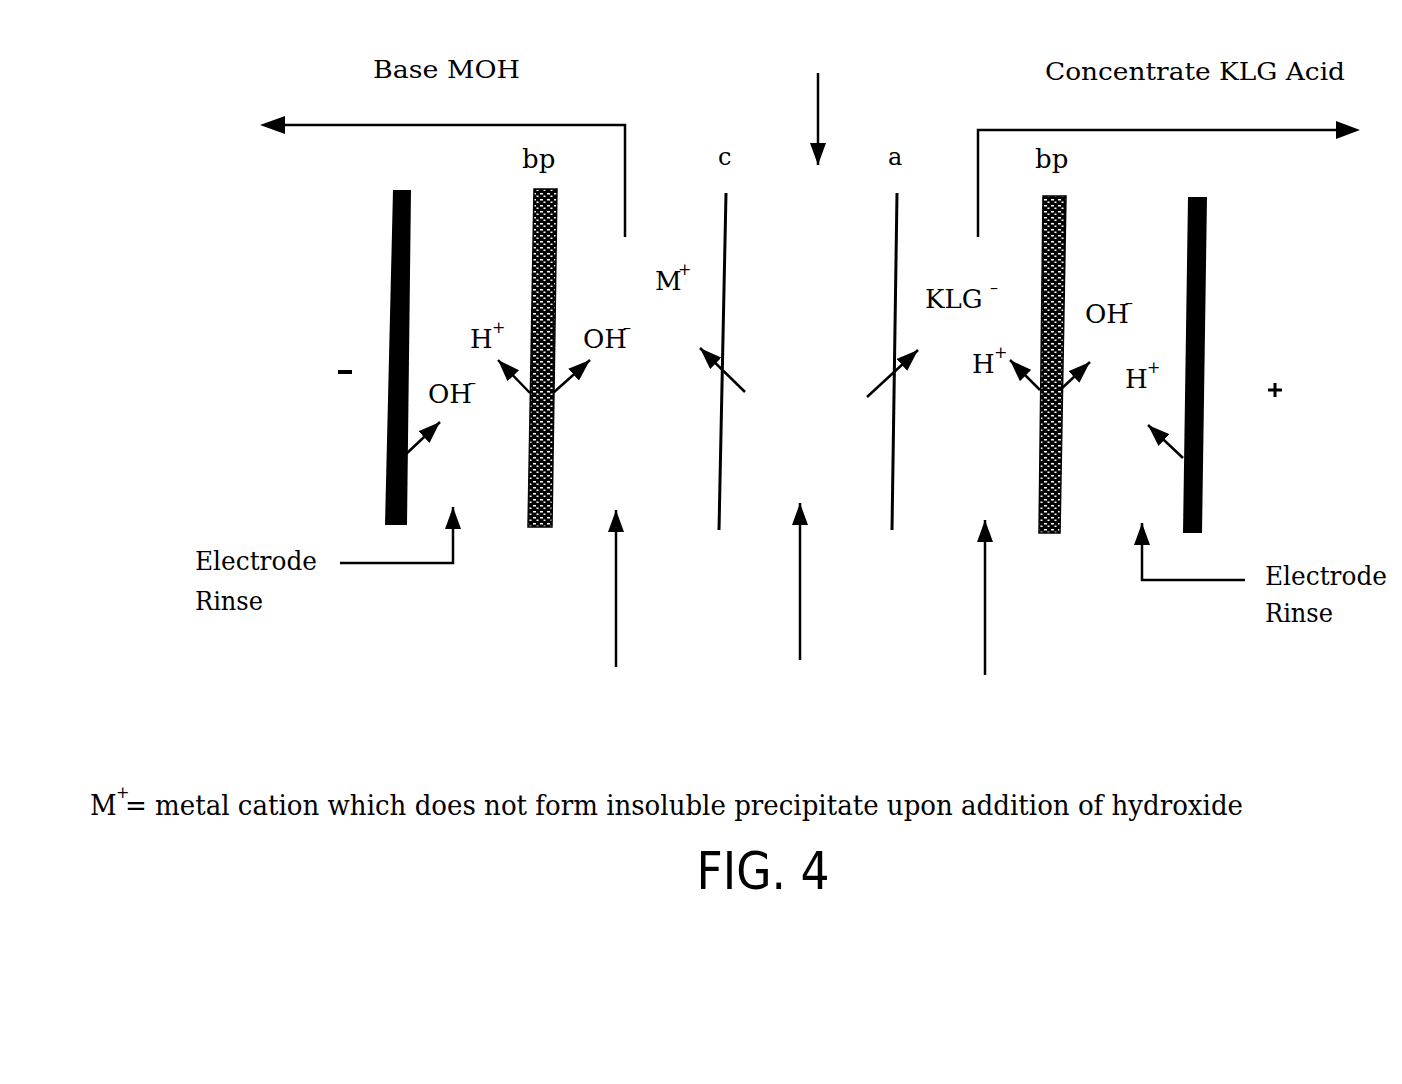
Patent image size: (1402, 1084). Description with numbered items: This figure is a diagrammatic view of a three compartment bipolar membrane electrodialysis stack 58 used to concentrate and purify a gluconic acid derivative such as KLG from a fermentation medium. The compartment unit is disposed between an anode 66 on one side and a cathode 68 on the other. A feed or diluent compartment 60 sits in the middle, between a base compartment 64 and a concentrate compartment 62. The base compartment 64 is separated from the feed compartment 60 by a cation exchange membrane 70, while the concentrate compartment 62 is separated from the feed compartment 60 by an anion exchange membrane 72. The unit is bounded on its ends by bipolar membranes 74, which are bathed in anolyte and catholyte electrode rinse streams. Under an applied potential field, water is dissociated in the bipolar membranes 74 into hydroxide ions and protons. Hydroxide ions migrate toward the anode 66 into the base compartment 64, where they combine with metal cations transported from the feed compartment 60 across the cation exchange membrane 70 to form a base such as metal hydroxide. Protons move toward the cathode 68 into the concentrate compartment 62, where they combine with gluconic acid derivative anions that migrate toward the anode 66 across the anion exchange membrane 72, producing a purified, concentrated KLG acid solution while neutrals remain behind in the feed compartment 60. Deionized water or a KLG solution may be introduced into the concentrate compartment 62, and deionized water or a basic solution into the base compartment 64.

The three compartment bipolar membrane ED stack 58 is at (819, 106).
The feed compartment 60 is at (777, 610).
The concentrate compartment 62 is at (974, 589).
The base compartment 64 is at (617, 585).
The anode 66 is at (1207, 330).
The cathode 68 is at (390, 330).
The cation exchange membrane 70 is at (722, 345).
The anion exchange membrane 72 is at (897, 290).
The bipolar membrane 74 is at (1068, 252).